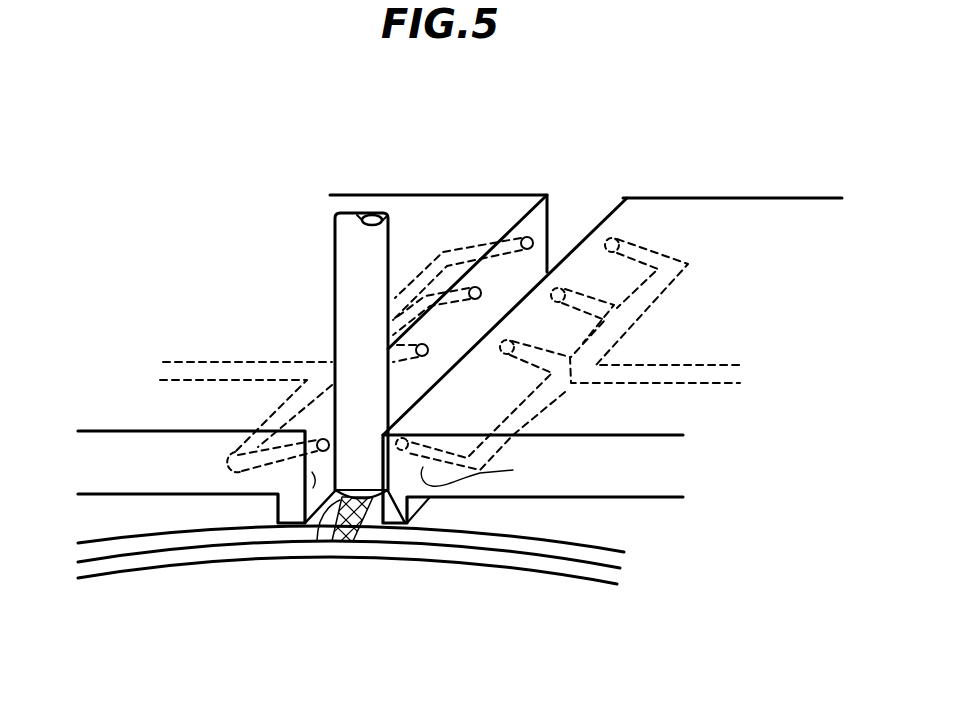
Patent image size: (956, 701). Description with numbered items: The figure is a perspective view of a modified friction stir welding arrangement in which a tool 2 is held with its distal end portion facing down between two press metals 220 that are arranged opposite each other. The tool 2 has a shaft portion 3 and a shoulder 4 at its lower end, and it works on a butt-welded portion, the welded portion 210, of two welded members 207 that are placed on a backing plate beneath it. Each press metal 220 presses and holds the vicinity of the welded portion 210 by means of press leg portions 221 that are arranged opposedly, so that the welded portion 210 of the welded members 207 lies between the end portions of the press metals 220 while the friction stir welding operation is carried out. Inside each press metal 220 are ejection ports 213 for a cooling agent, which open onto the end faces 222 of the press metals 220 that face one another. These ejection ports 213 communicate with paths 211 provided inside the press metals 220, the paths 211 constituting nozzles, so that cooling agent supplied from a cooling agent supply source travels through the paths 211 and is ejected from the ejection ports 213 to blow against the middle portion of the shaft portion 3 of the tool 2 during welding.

The tool 2 is at (370, 248).
The shaft portion 3 is at (338, 257).
The shoulder 4 is at (358, 535).
The welded members 207 is at (193, 505).
The welded portion 210 is at (322, 525).
The paths 211 is at (243, 432).
The ejection ports 213 is at (250, 463).
The press metals 220 is at (490, 218).
The press leg portions 221 is at (290, 525).
The end faces 222 is at (278, 513).